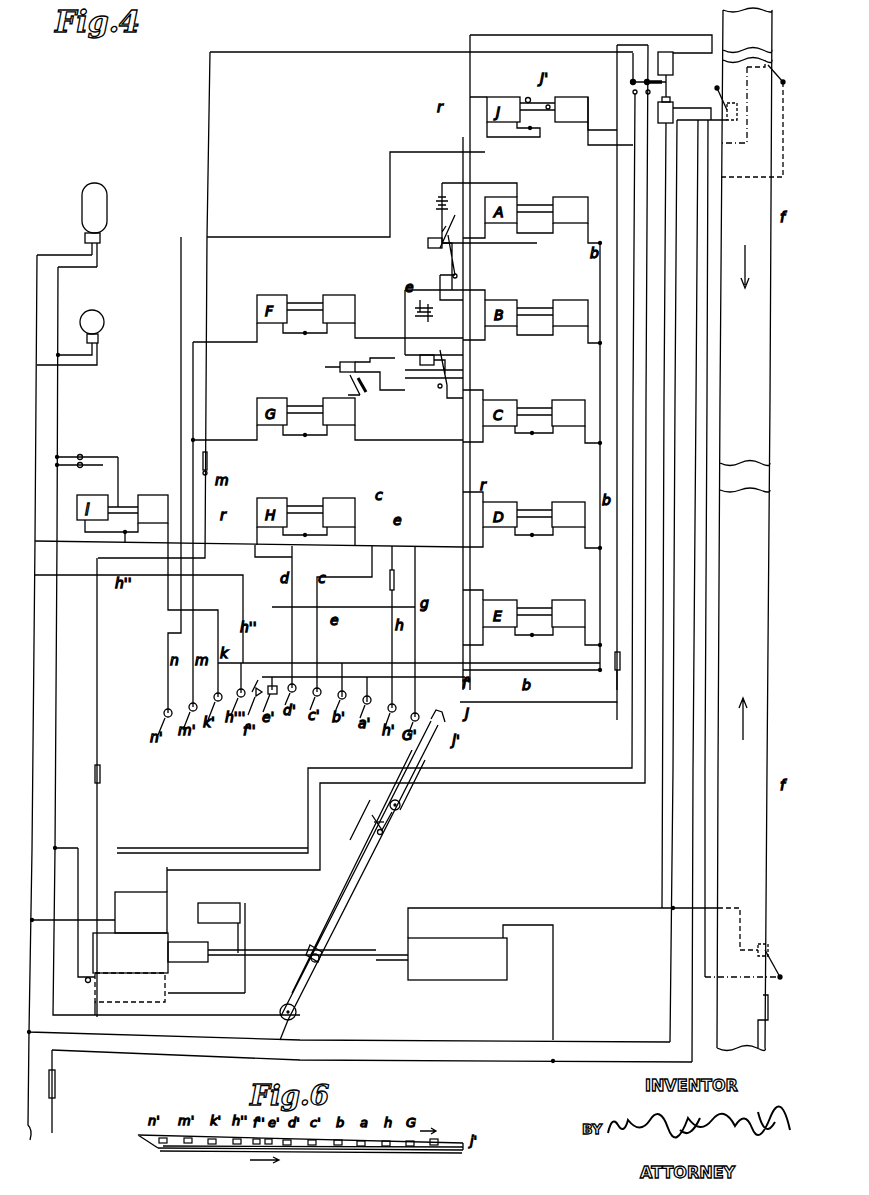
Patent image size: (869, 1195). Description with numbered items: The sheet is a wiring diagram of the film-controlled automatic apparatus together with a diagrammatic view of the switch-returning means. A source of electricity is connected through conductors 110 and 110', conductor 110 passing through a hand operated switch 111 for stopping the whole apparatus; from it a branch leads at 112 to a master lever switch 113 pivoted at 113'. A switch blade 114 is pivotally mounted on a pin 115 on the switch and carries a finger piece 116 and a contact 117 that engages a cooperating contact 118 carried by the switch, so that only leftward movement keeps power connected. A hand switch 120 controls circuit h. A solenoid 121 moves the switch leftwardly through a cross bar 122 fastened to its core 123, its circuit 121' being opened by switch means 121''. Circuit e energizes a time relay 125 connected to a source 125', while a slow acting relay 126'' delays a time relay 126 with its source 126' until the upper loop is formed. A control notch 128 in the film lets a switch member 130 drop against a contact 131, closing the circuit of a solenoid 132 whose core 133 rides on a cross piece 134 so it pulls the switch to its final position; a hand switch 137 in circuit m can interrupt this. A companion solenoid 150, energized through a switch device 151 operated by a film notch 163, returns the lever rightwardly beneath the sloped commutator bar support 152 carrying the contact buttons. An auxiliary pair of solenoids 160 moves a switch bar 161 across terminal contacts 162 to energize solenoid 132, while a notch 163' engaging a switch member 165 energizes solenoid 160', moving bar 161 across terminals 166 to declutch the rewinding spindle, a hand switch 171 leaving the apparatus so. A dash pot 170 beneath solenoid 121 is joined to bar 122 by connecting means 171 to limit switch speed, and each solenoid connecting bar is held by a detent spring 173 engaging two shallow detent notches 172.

In FIG. 4, the conductor 110 is at (75, 1091).
In FIG. 4, the conductor 110' is at (47, 1093).
In FIG. 4, the hand operated switch 111 is at (56, 1088).
In FIG. 4, the branch point 112 is at (285, 1045).
In FIG. 4, the master lever switch 113 is at (376, 865).
In FIG. 6, the master lever switch 113 is at (314, 1144).
In FIG. 4, the pivot 113' is at (320, 1013).
In FIG. 4, the switch blade 114 is at (386, 826).
In FIG. 4, the pin 115 is at (378, 838).
In FIG. 4, the finger piece 116 is at (390, 803).
In FIG. 4, the contact 117 is at (385, 834).
In FIG. 4, the cooperating contact 118 is at (376, 820).
In FIG. 4, the hand switch 120 is at (390, 585).
In FIG. 4, the solenoid 121 is at (152, 958).
In FIG. 4, the circuit 121' is at (364, 362).
In FIG. 4, the switch means 121'' is at (116, 759).
In FIG. 4, the cross bar 122 is at (268, 950).
In FIG. 4, the core 123 is at (180, 942).
In FIG. 4, the time relay 125 is at (421, 267).
In FIG. 4, the source of electricity 125' is at (421, 183).
In FIG. 4, the time relay 126 is at (416, 357).
In FIG. 4, the source of electricity 126' is at (400, 300).
In FIG. 4, the slow acting relay 126'' is at (336, 376).
In FIG. 4, the control notch 128 is at (771, 28).
In FIG. 4, the switch member 130 is at (770, 950).
In FIG. 4, the contact 131 is at (762, 930).
In FIG. 4, the solenoid 132 is at (140, 892).
In FIG. 4, the core 133 is at (220, 903).
In FIG. 4, the cross piece 134 is at (246, 920).
In FIG. 4, the hand switch 137 is at (207, 462).
In FIG. 4, the solenoid 150 is at (443, 980).
In FIG. 4, the switch device 151 is at (775, 70).
In FIG. 6, the commutator bar support 152 is at (425, 1152).
In FIG. 4, the auxiliary pair of solenoids 160 is at (665, 124).
In FIG. 4, the solenoid 160' is at (678, 42).
In FIG. 4, the switch bar 161 is at (632, 79).
In FIG. 4, the terminal contacts 162 is at (634, 94).
In FIG. 4, the notch 163 is at (763, 1035).
In FIG. 4, the notch 163' is at (745, 133).
In FIG. 4, the switch member 165 is at (715, 92).
In FIG. 4, the terminals 166 is at (630, 82).
In FIG. 4, the dash pot 170 is at (165, 1000).
In FIG. 4, the connecting means 171 is at (617, 672).
In FIG. 4, the detent notches 172 is at (549, 104).
In FIG. 4, the detent spring 173 is at (528, 97).